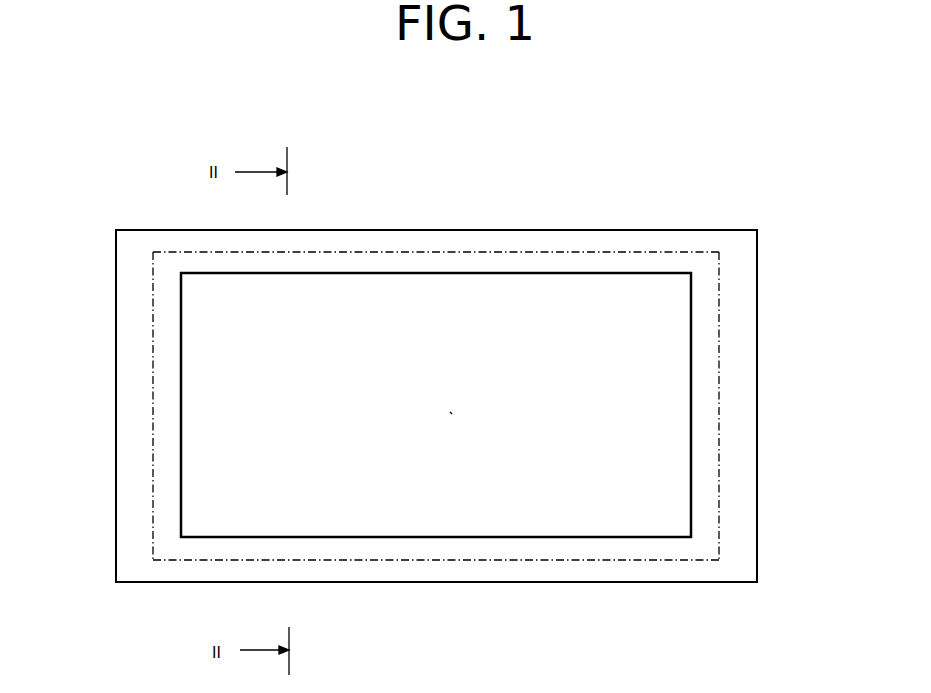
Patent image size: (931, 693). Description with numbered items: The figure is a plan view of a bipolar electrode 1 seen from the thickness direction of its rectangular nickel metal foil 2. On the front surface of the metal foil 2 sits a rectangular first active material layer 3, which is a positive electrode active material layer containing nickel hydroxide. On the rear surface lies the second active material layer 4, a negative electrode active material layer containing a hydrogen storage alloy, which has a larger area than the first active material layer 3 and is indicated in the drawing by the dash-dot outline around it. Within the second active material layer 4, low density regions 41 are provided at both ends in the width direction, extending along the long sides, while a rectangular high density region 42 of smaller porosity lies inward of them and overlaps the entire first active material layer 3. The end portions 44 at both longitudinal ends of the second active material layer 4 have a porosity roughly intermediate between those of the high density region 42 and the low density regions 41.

The bipolar electrode 1 is at (503, 194).
The metal foil 2 is at (678, 244).
The first active material layer 3 is at (589, 315).
The second active material layer 4 is at (698, 297).
The low density regions 41 is at (368, 263).
The high density region 42 is at (450, 412).
The end portions 44 is at (170, 387).